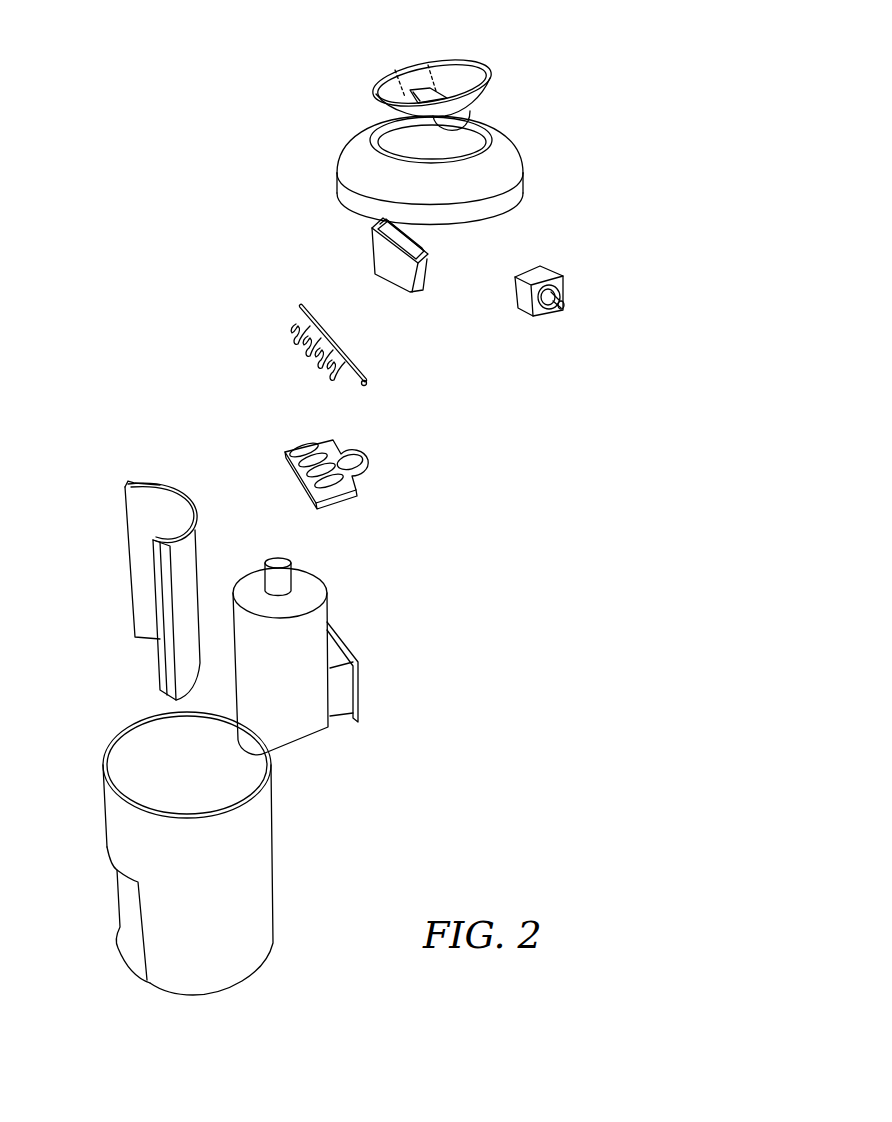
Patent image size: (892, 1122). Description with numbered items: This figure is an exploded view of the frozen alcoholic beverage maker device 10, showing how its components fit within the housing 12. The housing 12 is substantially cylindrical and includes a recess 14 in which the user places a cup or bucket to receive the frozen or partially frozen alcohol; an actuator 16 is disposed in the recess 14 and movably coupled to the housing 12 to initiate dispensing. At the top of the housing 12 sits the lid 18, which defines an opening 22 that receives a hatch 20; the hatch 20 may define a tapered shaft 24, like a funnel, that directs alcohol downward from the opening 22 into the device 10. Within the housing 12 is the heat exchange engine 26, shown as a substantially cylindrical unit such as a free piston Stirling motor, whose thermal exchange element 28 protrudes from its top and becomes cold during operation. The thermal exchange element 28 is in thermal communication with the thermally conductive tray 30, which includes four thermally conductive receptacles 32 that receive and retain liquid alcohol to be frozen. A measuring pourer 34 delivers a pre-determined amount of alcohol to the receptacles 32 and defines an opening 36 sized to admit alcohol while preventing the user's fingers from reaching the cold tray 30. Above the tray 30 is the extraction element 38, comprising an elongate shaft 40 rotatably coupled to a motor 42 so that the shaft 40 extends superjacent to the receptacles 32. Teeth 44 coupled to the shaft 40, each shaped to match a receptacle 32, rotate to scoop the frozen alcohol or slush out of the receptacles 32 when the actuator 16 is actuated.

The frozen alcoholic beverage maker device 10 is at (243, 150).
The housing 12 is at (273, 866).
The recess 14 is at (133, 956).
The actuator 16 is at (155, 483).
The lid 18 is at (505, 185).
The hatch 20 is at (482, 72).
The opening 22 is at (392, 144).
The tapered shaft 24 is at (476, 115).
The heat exchange engine 26 is at (298, 742).
The thermal exchange element 28 is at (284, 565).
The tray 30 is at (366, 477).
The thermally conductive receptacle 32 is at (319, 448).
The measuring pourer 34 is at (425, 270).
The opening 36 is at (386, 226).
The extraction element 38 is at (338, 348).
The elongate shaft 40 is at (366, 385).
The motor 42 is at (564, 307).
The teeth 44 is at (302, 337).